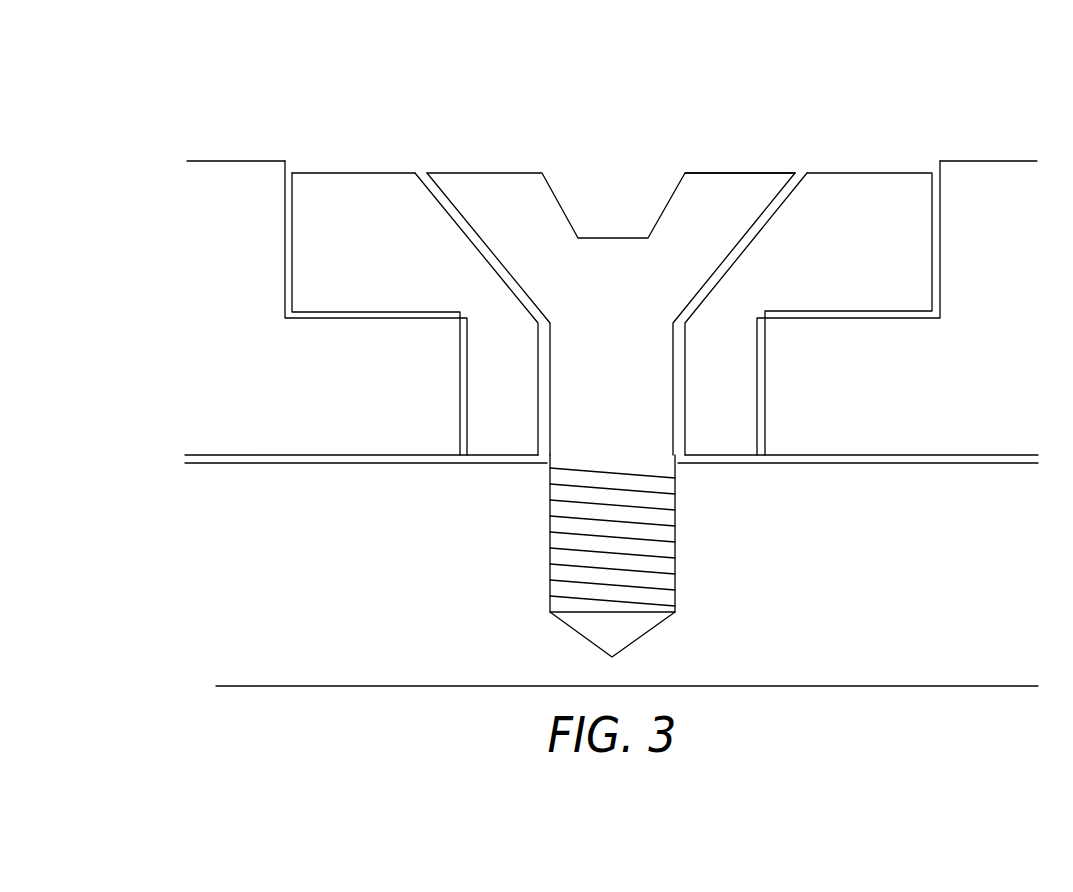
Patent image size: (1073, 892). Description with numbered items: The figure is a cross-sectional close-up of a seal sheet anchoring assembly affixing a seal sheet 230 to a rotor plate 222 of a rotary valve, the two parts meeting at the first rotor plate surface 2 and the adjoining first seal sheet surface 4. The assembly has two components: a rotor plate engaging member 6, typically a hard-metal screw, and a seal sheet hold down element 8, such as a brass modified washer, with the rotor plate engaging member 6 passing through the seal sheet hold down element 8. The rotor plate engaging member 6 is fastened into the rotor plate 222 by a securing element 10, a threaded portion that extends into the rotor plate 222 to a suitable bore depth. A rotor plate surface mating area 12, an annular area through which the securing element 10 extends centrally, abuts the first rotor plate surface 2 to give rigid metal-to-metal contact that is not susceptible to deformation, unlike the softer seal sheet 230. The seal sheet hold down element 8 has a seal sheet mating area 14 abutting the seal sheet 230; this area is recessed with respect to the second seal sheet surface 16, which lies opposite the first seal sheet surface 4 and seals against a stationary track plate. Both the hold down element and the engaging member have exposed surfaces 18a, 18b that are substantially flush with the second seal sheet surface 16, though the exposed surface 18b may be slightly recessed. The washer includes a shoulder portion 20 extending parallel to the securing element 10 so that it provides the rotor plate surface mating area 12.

The first rotor plate surface 2 is at (880, 465).
The first seal sheet surface 4 is at (918, 455).
The rotor plate engaging member 6 is at (602, 292).
The seal sheet hold down element 8 is at (830, 240).
The securing element 10 is at (562, 543).
The rotor plate surface mating area 12 is at (712, 455).
The seal sheet mating area 14 is at (835, 310).
The second seal sheet surface 16 is at (997, 161).
The exposed surface 18a is at (862, 173).
The exposed surface 18b is at (725, 173).
The shoulder portion 20 is at (481, 381).
The rotor plate 222 is at (958, 565).
The seal sheet 230 is at (968, 354).